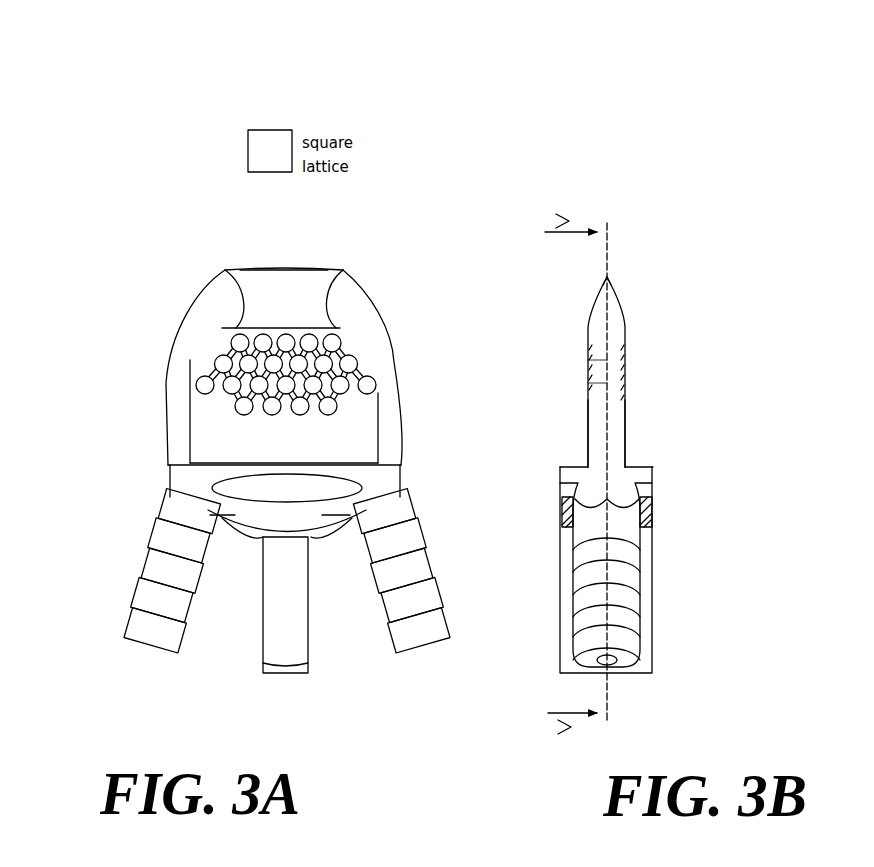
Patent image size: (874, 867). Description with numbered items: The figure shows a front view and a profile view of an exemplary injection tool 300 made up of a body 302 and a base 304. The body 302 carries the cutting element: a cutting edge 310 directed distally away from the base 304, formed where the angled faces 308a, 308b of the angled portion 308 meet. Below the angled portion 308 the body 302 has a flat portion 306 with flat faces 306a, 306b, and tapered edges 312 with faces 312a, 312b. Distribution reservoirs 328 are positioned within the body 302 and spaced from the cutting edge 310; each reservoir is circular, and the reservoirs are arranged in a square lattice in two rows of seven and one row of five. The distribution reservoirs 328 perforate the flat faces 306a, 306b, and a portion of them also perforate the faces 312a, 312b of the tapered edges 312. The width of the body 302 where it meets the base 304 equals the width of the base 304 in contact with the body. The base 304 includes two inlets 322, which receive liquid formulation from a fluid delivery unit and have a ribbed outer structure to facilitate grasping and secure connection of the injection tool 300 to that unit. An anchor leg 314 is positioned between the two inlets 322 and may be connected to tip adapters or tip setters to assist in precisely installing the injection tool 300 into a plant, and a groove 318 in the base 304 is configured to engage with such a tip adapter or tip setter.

In FIG. 3A, the injection tool 300 is at (138, 196).
In FIG. 3B, the injection tool 300 is at (528, 196).
In FIG. 3A, the body 302 is at (102, 255).
In FIG. 3A, the base 304 is at (90, 487).
In FIG. 3B, the flat portion 306 is at (727, 360).
In FIG. 3A, the flat face 306a is at (290, 442).
In FIG. 3B, the flat face 306a is at (578, 443).
In FIG. 3B, the flat face 306b is at (631, 443).
In FIG. 3B, the angled portion 308 is at (727, 272).
In FIG. 3A, the angled face 308a is at (290, 283).
In FIG. 3B, the angled face 308a is at (592, 305).
In FIG. 3B, the angled face 308b is at (624, 305).
In FIG. 3A, the cutting edge 310 is at (294, 263).
In FIG. 3B, the cutting edge 310 is at (610, 270).
In FIG. 3A, the tapered edges 312 is at (200, 305).
In FIG. 3B, the tapered edges 312 is at (608, 343).
In FIG. 3A, the face of tapered edge 312a is at (203, 337).
In FIG. 3B, the face of tapered edge 312a is at (598, 430).
In FIG. 3B, the face of tapered edge 312b is at (617, 430).
In FIG. 3A, the anchor leg 314 is at (287, 641).
In FIG. 3B, the anchor leg 314 is at (643, 653).
In FIG. 3A, the groove 318 is at (303, 491).
In FIG. 3B, the inlets 322 is at (617, 670).
In FIG. 3A, the distribution reservoirs 328 is at (453, 369).
In FIG. 3B, the distribution reservoirs 328 is at (518, 369).